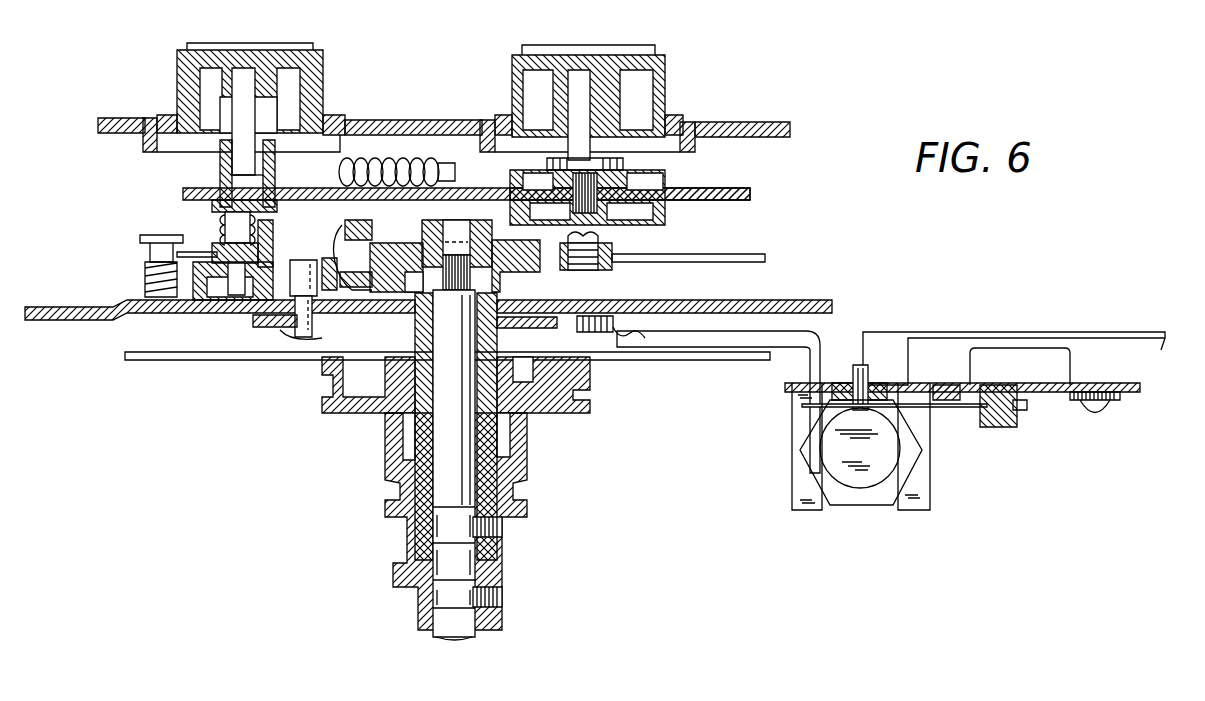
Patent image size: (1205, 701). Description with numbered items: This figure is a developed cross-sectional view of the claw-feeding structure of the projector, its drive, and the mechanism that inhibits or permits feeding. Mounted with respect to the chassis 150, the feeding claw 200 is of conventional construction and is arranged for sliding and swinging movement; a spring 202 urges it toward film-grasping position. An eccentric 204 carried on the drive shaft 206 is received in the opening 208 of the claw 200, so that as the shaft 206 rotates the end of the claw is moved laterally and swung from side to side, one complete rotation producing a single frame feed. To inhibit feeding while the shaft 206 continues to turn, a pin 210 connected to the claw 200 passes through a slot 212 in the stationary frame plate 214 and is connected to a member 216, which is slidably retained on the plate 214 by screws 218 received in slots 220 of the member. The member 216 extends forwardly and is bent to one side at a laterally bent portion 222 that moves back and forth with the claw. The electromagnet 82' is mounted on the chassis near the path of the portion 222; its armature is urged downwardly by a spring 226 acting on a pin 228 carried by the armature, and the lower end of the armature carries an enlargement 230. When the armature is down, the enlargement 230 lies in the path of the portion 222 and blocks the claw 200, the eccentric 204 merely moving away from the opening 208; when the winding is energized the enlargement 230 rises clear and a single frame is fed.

The chassis 150 is at (61, 290).
The feeding claw 200 is at (692, 262).
The spring 202 is at (215, 224).
The eccentric 204 is at (412, 305).
The drive shaft 206 is at (460, 480).
The opening 208 is at (384, 278).
The pin 210 is at (300, 285).
The slot 212 is at (320, 318).
The stationary frame plate 214 is at (521, 312).
The member 216 is at (536, 329).
The screws 218 is at (626, 338).
The slots 220 is at (565, 331).
The laterally bent portion 222 is at (812, 425).
The spring 226 is at (985, 420).
The pin 228 is at (861, 364).
The enlargement 230 is at (890, 455).
The electromagnet 82' is at (861, 471).